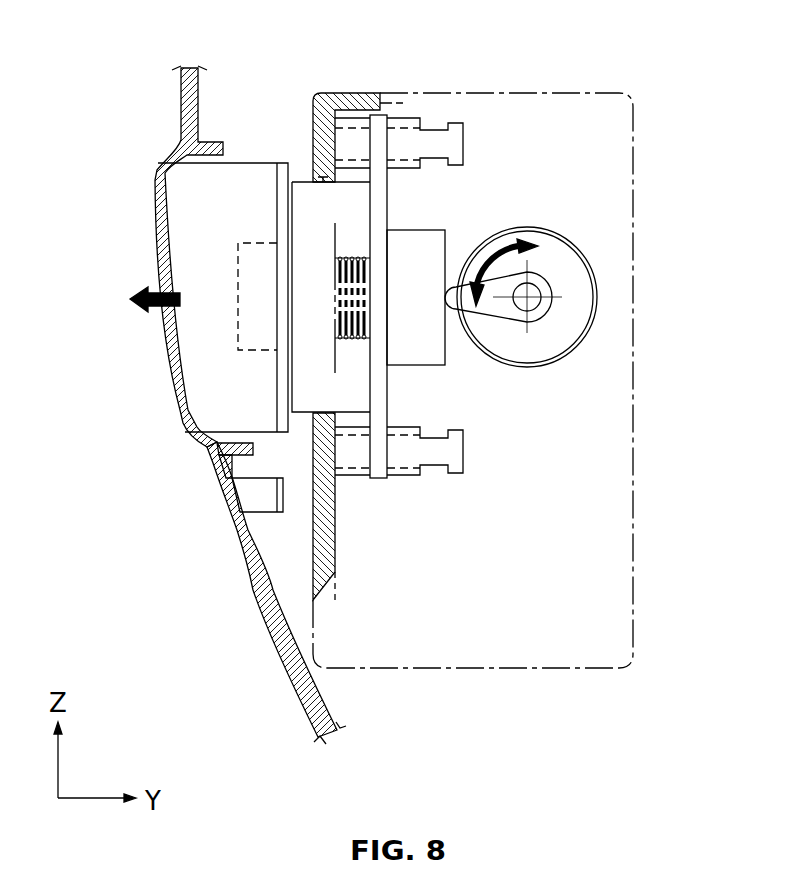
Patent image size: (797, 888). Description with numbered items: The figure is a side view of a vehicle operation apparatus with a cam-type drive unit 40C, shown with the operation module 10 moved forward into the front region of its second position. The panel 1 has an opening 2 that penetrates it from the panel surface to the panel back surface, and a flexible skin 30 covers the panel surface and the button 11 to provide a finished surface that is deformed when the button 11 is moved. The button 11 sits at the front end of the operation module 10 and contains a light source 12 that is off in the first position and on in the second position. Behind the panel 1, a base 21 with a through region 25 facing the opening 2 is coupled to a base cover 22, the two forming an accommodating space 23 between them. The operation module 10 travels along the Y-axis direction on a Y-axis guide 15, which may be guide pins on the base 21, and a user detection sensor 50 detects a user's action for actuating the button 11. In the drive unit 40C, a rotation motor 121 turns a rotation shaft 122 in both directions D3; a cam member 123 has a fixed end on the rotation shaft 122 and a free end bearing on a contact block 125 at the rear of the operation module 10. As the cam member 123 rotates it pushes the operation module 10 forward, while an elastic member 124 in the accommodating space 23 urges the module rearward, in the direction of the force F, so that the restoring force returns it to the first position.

The panel 1 is at (321, 698).
The opening 2 is at (213, 162).
The operation module 10 is at (258, 147).
The button 11 is at (183, 240).
The light source 12 is at (238, 332).
The Y-axis guide 15 is at (456, 128).
The base 21 is at (325, 98).
The base cover 22 is at (588, 92).
The accommodating space 23 is at (426, 625).
The through region 25 is at (344, 203).
The skin 30 is at (258, 612).
The user detection sensor 50 is at (240, 497).
The rotation motor 121 is at (578, 310).
The rotation shaft 122 is at (537, 282).
The cam member 123 is at (503, 312).
The elastic member 124 is at (352, 255).
The contact block 125 is at (423, 360).
The drive unit 40C is at (573, 226).
The force direction F is at (130, 293).
The both directions D3 is at (510, 243).